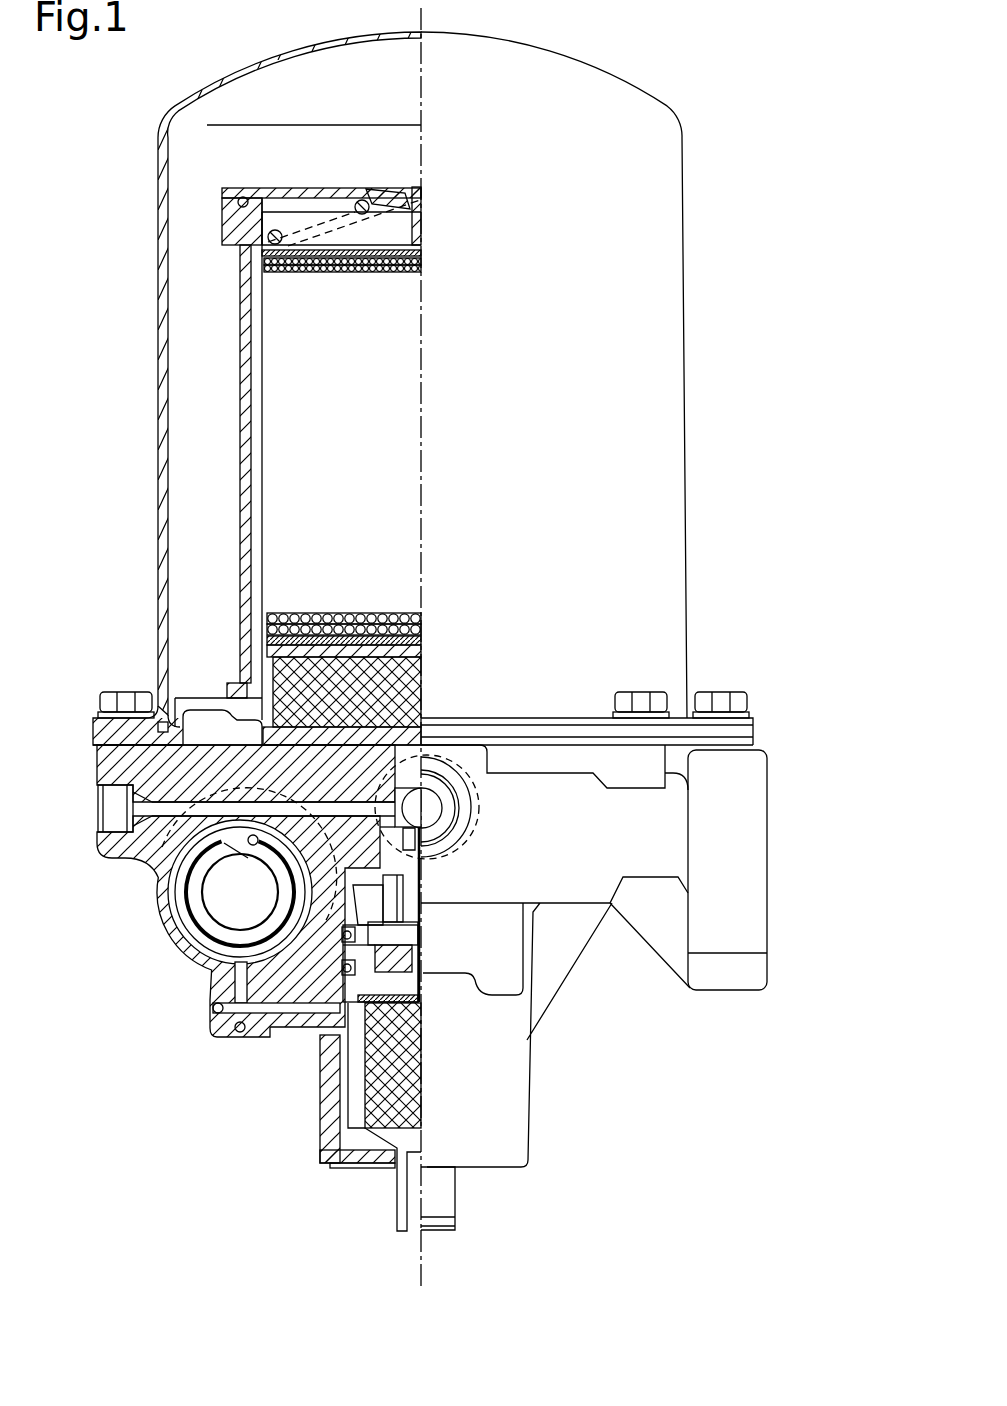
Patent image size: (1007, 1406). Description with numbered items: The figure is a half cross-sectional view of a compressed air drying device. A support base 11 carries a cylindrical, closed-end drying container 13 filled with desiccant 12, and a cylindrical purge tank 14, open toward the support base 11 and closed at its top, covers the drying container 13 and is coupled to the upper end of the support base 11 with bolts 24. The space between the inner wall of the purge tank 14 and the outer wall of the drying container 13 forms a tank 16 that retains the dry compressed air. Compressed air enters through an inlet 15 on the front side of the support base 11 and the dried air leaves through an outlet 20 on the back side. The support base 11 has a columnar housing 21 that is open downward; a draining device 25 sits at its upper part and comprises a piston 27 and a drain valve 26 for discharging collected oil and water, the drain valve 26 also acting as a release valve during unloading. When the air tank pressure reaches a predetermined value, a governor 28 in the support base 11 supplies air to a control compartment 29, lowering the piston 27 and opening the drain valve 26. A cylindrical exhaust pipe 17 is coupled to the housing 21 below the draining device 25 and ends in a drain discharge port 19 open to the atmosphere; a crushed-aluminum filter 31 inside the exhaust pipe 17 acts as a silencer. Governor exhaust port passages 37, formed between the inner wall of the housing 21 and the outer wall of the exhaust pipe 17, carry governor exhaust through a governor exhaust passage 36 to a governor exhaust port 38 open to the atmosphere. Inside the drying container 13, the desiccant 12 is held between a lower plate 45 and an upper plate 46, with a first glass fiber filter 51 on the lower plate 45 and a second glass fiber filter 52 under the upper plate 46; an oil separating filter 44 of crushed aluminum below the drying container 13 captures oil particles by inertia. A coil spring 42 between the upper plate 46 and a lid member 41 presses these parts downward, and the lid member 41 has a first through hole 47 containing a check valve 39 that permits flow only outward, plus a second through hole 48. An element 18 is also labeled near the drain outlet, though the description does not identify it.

The support base 11 is at (528, 1092).
The desiccant 12 is at (298, 273).
The drying container 13 is at (240, 303).
The purge tank 14 is at (157, 206).
The inlet 15 is at (465, 818).
The tank 16 is at (403, 99).
The exhaust pipe 17 is at (457, 1196).
The drain tube 18 is at (404, 1233).
The drain discharge port 19 is at (422, 1237).
The outlet 20 is at (446, 744).
The housing 21 is at (419, 886).
The bolts 24 is at (127, 690).
The draining device 25 is at (319, 784).
The drain valve 26 is at (421, 977).
The piston 27 is at (346, 790).
The governor 28 is at (150, 880).
The control compartment 29 is at (481, 800).
The filter 31 is at (421, 1046).
The governor exhaust passage 36 is at (293, 1012).
The governor exhaust port passages 37 is at (330, 1150).
The governor exhaust port 38 is at (358, 1168).
The check valve 39 is at (418, 188).
The lid member 41 is at (335, 189).
The coil spring 42 is at (260, 196).
The oil separating filter 44 is at (425, 676).
The lower plate 45 is at (320, 618).
The upper plate 46 is at (345, 273).
The first through hole 47 is at (378, 189).
The second through hole 48 is at (299, 189).
The first glass fiber filter 51 is at (374, 618).
The second glass fiber filter 52 is at (388, 273).